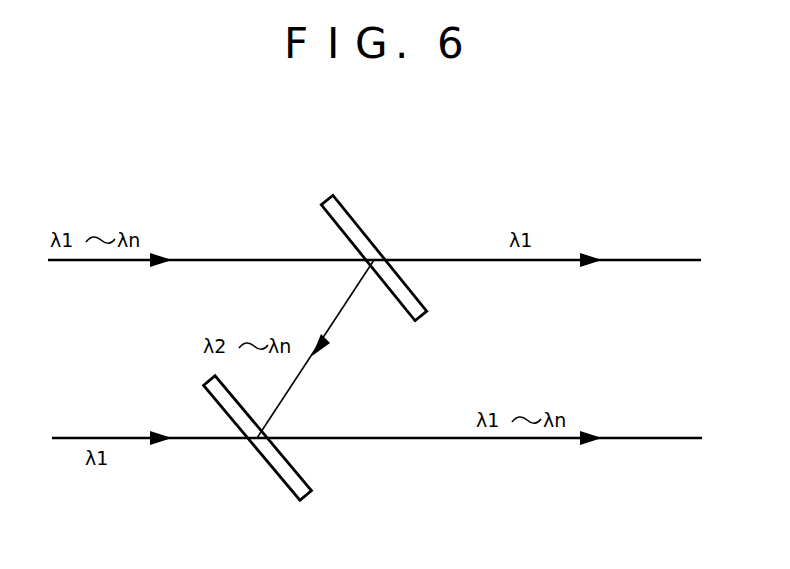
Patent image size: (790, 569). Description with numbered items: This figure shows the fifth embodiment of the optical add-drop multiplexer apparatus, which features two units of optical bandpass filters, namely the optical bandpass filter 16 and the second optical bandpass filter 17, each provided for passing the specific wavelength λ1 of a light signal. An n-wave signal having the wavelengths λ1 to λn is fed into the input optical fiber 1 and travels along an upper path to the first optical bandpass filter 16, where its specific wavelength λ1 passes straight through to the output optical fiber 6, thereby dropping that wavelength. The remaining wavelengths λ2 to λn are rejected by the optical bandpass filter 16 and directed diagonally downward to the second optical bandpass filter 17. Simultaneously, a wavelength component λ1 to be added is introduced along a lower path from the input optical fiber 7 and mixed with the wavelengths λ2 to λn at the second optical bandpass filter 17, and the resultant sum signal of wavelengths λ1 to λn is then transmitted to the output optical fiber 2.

The input optical fiber 1 is at (210, 258).
The output optical fiber 6 is at (652, 258).
The input optical fiber 7 is at (192, 441).
The output optical fiber 2 is at (500, 441).
The optical bandpass filter 16 is at (357, 222).
The optical bandpass filter 17 is at (289, 488).